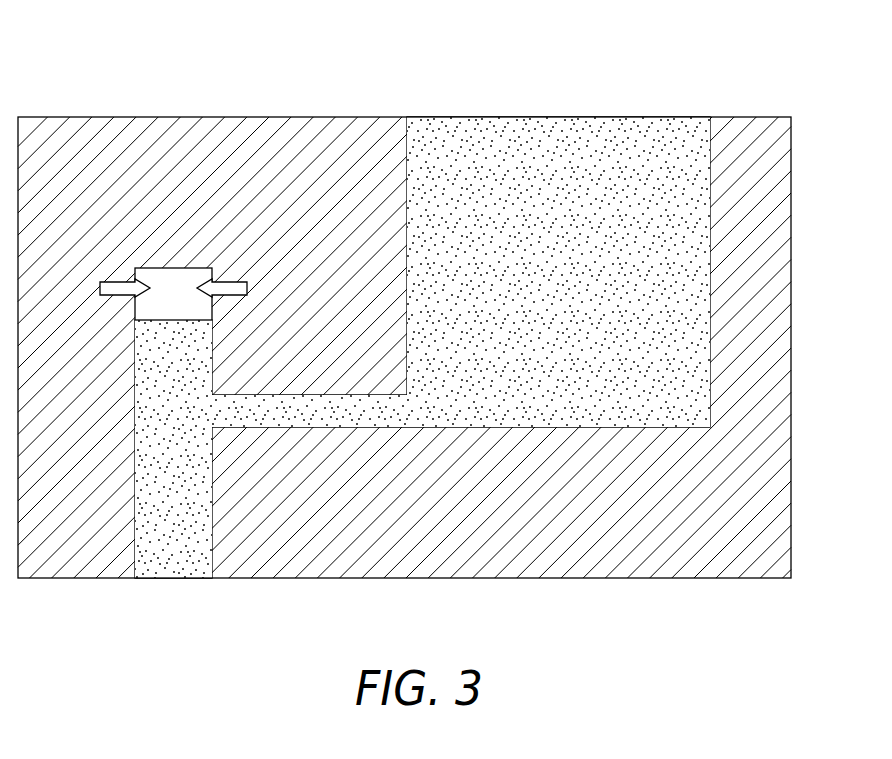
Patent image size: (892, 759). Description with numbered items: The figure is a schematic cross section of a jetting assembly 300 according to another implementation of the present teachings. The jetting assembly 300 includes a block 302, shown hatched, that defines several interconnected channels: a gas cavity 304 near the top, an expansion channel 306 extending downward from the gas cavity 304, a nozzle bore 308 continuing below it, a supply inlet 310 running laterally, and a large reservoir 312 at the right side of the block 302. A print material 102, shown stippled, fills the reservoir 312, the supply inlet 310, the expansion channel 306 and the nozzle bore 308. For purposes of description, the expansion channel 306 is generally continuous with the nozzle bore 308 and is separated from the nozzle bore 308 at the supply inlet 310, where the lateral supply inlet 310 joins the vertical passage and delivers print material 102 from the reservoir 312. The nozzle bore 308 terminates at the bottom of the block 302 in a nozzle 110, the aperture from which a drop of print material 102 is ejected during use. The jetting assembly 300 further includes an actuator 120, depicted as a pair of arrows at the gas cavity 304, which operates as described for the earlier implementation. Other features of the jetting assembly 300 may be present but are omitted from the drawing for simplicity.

The jetting assembly 300 is at (180, 92).
The block 302 is at (764, 522).
The print material 102 is at (568, 143).
The gas cavity 304 is at (188, 313).
The expansion channel 306 is at (126, 322).
The nozzle bore 308 is at (126, 430).
The supply inlet 310 is at (402, 386).
The reservoir 312 is at (728, 118).
The nozzle 110 is at (210, 591).
The actuator 120 is at (227, 283).